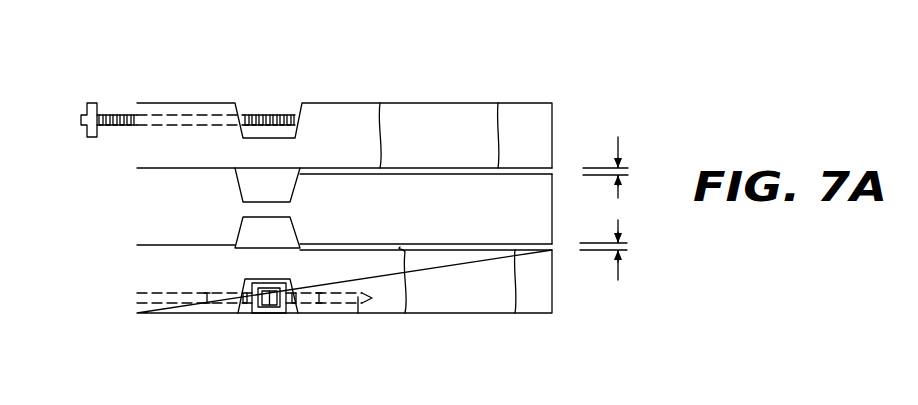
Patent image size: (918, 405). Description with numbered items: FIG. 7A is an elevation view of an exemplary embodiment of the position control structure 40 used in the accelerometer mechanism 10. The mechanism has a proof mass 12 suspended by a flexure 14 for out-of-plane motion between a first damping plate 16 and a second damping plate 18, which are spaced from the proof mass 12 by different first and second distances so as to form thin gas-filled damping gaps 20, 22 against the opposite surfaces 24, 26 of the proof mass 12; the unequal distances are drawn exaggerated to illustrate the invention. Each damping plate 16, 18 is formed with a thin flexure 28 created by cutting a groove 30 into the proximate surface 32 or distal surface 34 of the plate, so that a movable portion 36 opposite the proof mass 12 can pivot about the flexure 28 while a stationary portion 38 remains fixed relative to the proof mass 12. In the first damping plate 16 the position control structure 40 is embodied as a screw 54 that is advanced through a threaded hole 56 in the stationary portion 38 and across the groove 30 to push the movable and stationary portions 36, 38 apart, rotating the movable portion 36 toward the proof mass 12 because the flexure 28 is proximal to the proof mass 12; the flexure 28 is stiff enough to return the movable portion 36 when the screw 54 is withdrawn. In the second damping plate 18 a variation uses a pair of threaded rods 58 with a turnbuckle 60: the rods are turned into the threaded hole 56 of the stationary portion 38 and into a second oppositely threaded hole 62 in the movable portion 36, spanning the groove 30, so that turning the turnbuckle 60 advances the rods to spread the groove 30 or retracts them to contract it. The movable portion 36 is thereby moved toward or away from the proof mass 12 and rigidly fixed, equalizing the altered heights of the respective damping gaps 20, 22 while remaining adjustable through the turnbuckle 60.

The accelerometer mechanism 10 is at (599, 96).
The proof mass 12 is at (465, 218).
The flexure 14 is at (278, 208).
The first damping plate 16 is at (135, 105).
The second damping plate 18 is at (137, 262).
The first damping gap 20 is at (560, 170).
The second damping gap 22 is at (560, 247).
The first surface of proof mass 24 is at (498, 103).
The second surface of proof mass 26 is at (515, 313).
The flexure 28 is at (276, 162).
The groove 30 is at (296, 101).
The proximate surface 32 is at (380, 103).
The distal surface 34 is at (438, 103).
The movable portion 36 is at (460, 150).
The stationary portion 38 is at (194, 161).
The position control structure 40 is at (277, 68).
The screw 54 is at (82, 110).
The threaded hole 56 is at (128, 133).
The threaded rod 58 is at (216, 303).
The turnbuckle 60 is at (256, 313).
The second oppositely threaded hole 62 is at (358, 313).